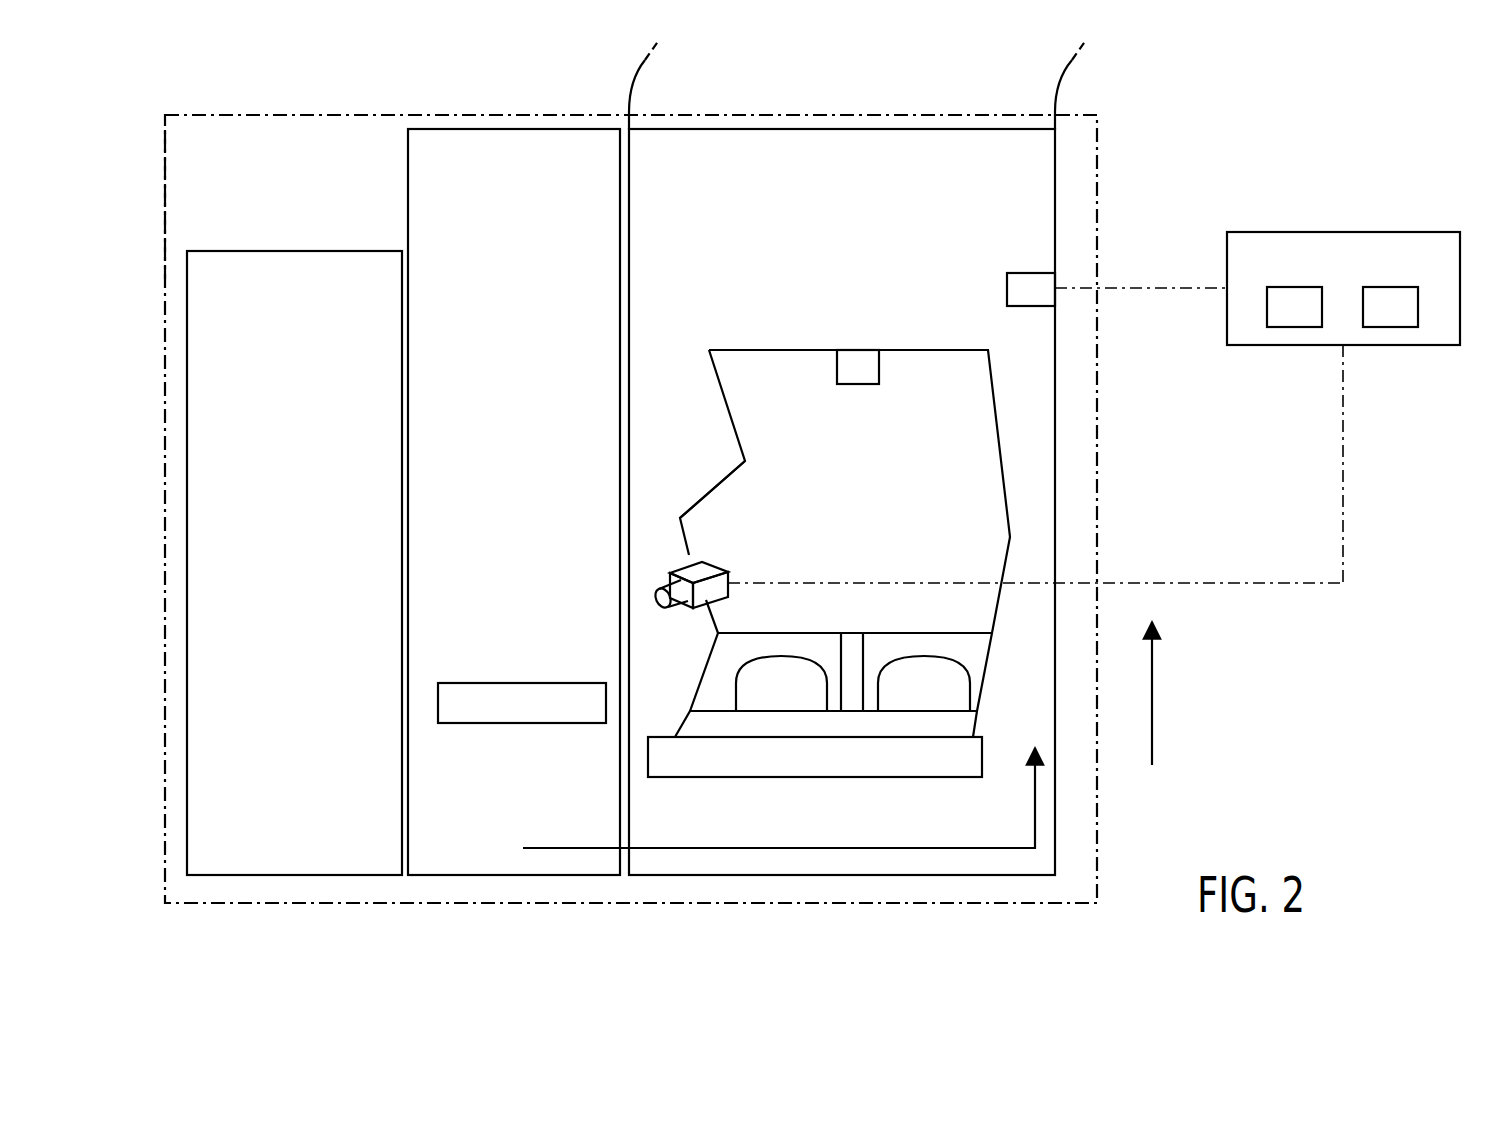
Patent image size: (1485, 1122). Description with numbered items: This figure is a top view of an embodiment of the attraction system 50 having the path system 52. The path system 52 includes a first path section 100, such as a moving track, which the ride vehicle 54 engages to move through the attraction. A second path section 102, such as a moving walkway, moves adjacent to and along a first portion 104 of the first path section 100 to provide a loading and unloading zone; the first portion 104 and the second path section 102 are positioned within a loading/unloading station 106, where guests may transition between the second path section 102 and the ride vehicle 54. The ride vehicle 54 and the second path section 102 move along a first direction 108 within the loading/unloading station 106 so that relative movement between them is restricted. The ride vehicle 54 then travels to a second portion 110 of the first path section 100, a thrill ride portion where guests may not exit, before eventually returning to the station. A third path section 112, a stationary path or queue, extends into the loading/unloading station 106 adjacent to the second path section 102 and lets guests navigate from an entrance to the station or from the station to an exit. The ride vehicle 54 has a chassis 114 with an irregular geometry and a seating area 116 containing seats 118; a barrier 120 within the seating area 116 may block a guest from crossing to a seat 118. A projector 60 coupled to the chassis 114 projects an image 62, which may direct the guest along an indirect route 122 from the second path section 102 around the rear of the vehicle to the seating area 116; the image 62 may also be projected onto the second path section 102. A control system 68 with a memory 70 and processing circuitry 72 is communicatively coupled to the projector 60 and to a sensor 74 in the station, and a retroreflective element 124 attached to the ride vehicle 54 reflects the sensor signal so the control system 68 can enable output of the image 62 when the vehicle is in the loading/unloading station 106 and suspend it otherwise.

The attraction system 50 is at (125, 100).
The path system 52 is at (243, 101).
The ride vehicle 54 is at (783, 318).
The projector 60 is at (718, 565).
The image 62 is at (520, 683).
The control system 68 is at (1345, 232).
The memory 70 is at (1294, 327).
The processing circuitry 72 is at (1390, 327).
The sensor 74 is at (1030, 273).
The first path section 100 is at (1125, 133).
The second path section 102 is at (408, 189).
The first portion 104 is at (1055, 199).
The loading/unloading station 106 is at (165, 205).
The first direction 108 is at (1153, 697).
The second portion 110 is at (1064, 80).
The third path section 112 is at (292, 251).
The chassis 114 is at (722, 480).
The seating area 116 is at (733, 670).
The seat 118 is at (955, 660).
The barrier 120 is at (853, 640).
The indirect route 122 is at (575, 848).
The retroreflective element 124 is at (857, 385).